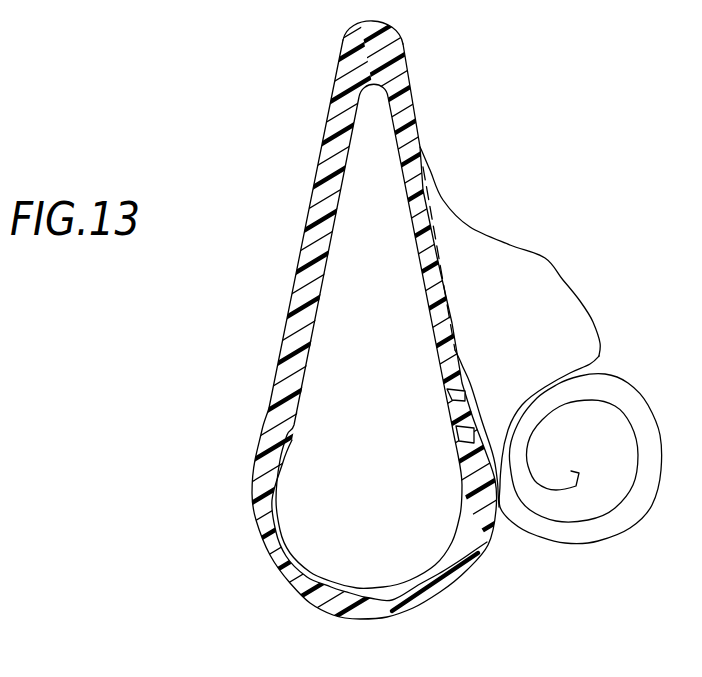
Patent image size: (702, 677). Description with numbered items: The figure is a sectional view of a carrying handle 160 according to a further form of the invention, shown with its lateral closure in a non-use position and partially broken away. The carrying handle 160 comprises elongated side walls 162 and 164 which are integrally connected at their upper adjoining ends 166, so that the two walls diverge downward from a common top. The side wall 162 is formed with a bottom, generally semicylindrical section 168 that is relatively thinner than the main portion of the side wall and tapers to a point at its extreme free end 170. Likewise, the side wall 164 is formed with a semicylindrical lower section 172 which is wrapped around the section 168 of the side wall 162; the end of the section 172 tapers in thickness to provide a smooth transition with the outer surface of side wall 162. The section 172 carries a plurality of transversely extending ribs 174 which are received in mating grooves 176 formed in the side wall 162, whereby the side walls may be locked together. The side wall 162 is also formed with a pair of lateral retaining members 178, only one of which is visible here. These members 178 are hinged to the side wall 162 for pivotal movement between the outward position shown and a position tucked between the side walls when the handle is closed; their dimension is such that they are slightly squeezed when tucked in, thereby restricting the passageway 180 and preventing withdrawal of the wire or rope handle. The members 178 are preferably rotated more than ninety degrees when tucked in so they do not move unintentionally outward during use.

The carrying handle 160 is at (440, 125).
The side wall 162 is at (420, 144).
The side wall 164 is at (318, 246).
The upper adjoining ends 166 is at (410, 104).
The bottom semicylindrical section 168 is at (408, 590).
The free end 170 is at (281, 458).
The semicylindrical lower section 172 is at (388, 608).
The transversely extending ribs 174 is at (462, 412).
The mating grooves 176 is at (470, 447).
The lateral retaining members 178 is at (525, 273).
The passageway 180 is at (557, 382).